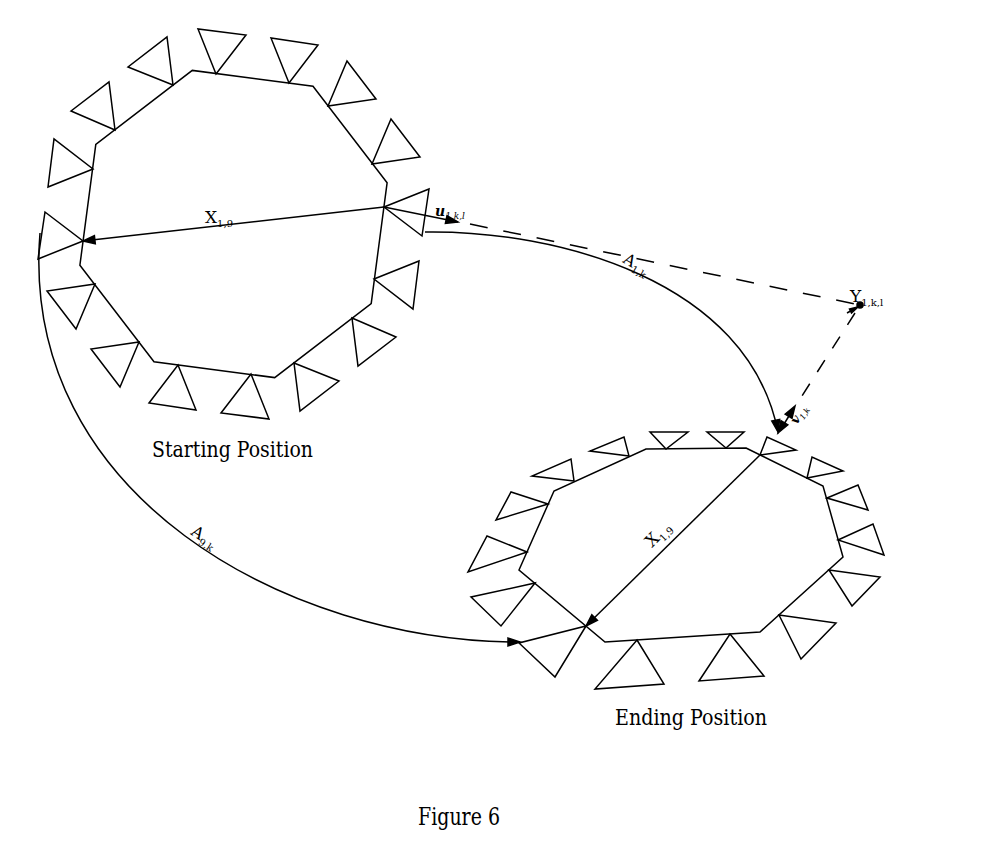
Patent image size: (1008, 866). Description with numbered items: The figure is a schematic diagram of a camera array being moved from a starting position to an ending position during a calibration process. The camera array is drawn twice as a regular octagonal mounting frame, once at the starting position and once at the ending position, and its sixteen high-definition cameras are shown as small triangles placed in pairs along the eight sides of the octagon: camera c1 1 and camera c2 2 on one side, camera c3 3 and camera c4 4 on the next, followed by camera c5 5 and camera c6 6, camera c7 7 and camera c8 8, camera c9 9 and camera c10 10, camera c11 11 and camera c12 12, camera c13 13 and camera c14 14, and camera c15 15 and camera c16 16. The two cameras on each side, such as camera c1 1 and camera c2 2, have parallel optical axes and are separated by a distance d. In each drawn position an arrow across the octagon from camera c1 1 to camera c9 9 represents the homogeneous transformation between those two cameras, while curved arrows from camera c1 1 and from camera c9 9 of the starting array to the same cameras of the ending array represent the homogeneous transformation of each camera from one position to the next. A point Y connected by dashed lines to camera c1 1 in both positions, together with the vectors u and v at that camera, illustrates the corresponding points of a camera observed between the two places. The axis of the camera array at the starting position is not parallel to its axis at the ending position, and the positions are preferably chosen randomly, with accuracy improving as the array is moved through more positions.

The camera c1 1 is at (590, 322).
The camera c2 2 is at (608, 369).
The camera c3 3 is at (610, 414).
The camera c4 4 is at (589, 459).
The camera c5 5 is at (550, 490).
The camera c6 6 is at (492, 512).
The camera c7 7 is at (427, 511).
The camera c8 8 is at (355, 486).
The camera c9 9 is at (312, 444).
The camera c10 10 is at (291, 382).
The camera c11 11 is at (299, 327).
The camera c12 12 is at (338, 278).
The camera c13 13 is at (386, 255).
The camera c14 14 is at (450, 247).
The camera c15 15 is at (508, 255).
The camera c16 16 is at (558, 283).